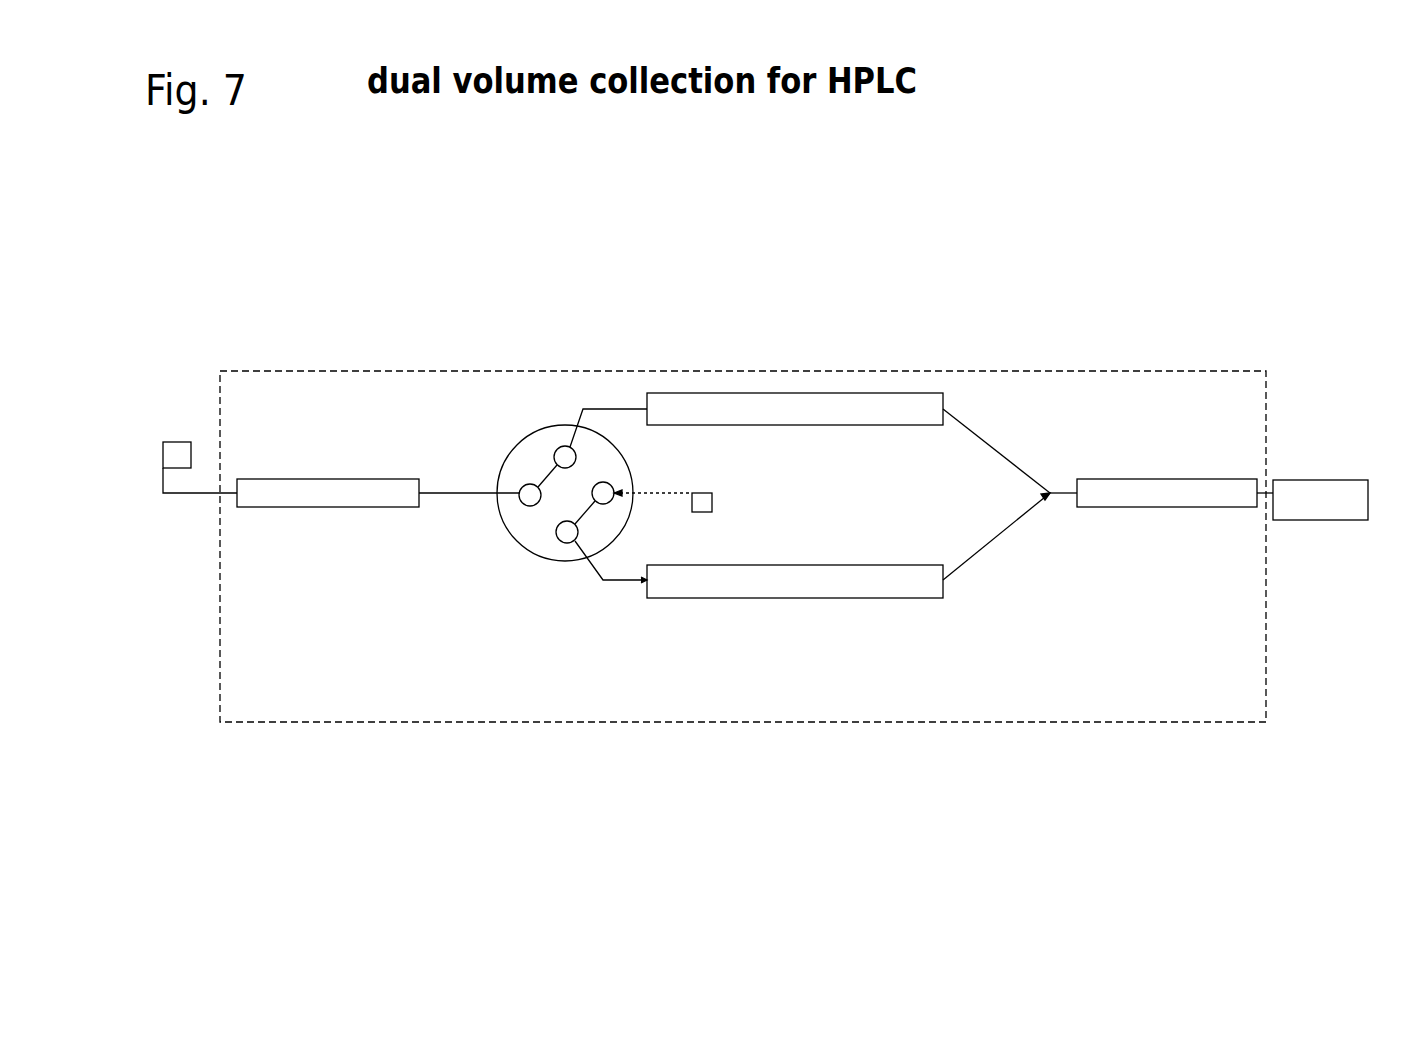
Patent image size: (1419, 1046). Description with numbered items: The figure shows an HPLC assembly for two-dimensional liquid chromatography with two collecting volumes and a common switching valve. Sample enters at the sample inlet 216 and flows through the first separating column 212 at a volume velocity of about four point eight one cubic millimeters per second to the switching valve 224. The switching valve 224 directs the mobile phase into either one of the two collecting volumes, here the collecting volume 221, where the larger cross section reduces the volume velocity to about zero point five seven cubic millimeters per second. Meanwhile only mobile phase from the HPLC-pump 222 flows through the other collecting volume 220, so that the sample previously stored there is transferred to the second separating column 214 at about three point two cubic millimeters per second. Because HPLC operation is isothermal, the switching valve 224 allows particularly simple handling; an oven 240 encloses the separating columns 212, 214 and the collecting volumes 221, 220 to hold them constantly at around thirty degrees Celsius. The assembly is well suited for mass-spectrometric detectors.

The sample inlet 216 is at (175, 457).
The first separating column 212 is at (285, 497).
The switching valve 224 is at (537, 535).
The HPLC-pump 222 is at (713, 500).
The collecting volume 221 is at (932, 403).
The collecting volume 220 is at (925, 585).
The oven 240 is at (1165, 368).
The second separating column 214 is at (1228, 492).